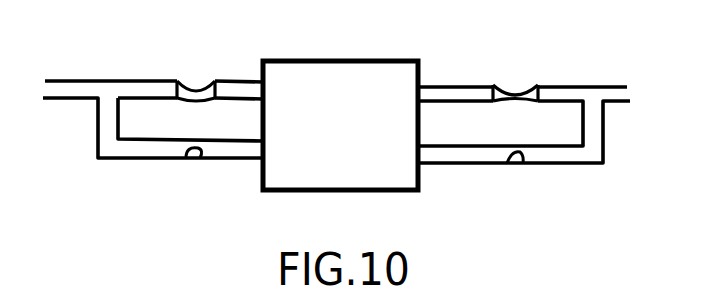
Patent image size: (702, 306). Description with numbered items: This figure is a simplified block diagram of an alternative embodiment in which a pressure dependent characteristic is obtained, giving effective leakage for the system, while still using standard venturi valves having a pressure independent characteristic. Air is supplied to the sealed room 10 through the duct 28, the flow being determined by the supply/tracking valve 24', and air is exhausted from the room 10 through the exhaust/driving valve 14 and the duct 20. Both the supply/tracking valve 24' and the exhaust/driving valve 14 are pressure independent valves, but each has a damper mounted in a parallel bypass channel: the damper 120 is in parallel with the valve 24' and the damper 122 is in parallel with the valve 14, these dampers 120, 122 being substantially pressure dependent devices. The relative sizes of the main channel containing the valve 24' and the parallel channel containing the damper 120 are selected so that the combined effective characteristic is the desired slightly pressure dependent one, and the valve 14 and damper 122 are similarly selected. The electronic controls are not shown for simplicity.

The sealed room 10 is at (348, 58).
The duct 28 is at (135, 80).
The supply/tracking valve 24' is at (196, 65).
The damper 120 is at (201, 152).
The exhaust/driving valve 14 is at (513, 88).
The duct 20 is at (612, 85).
The damper 122 is at (521, 152).